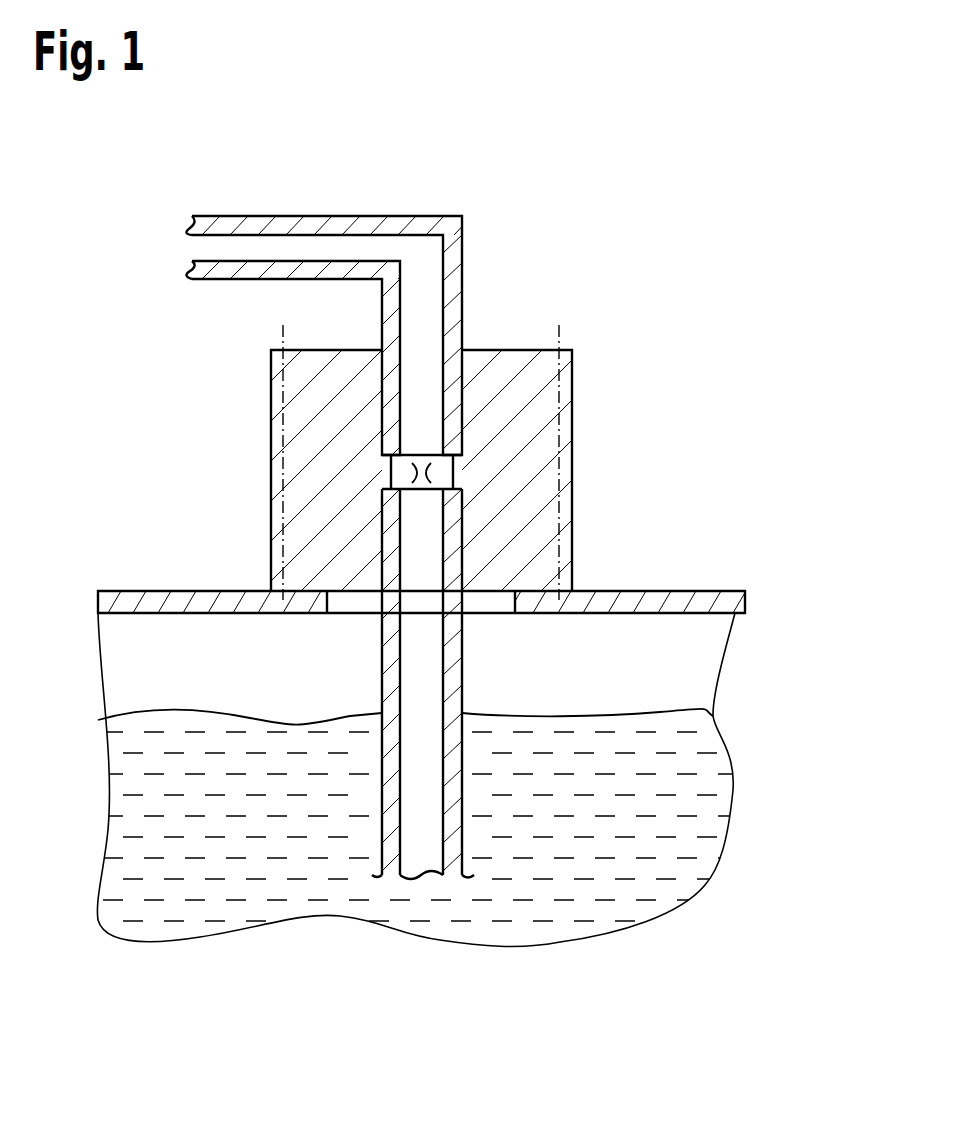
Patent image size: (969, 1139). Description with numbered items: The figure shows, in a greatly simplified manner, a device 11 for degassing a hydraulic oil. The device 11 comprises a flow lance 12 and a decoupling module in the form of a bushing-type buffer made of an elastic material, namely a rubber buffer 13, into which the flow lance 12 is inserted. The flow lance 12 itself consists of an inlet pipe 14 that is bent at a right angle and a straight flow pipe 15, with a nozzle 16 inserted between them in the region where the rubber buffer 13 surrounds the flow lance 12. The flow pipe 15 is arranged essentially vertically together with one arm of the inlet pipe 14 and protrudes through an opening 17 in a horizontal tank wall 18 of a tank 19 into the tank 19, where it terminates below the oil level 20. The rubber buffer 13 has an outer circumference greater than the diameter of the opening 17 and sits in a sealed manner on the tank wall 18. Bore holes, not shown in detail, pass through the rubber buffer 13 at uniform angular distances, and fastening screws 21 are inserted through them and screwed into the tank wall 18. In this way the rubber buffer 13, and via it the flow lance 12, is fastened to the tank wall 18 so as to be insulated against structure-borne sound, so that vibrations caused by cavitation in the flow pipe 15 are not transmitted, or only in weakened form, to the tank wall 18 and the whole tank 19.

The device 11 is at (543, 169).
The flow lance 12 is at (502, 310).
The rubber buffer 13 is at (535, 410).
The inlet pipe 14 is at (308, 226).
The flow pipe 15 is at (455, 820).
The nozzle 16 is at (435, 474).
The opening 17 is at (512, 596).
The tank wall 18 is at (715, 591).
The tank 19 is at (770, 806).
The oil level 20 is at (637, 713).
The fastening screws 21 is at (565, 514).